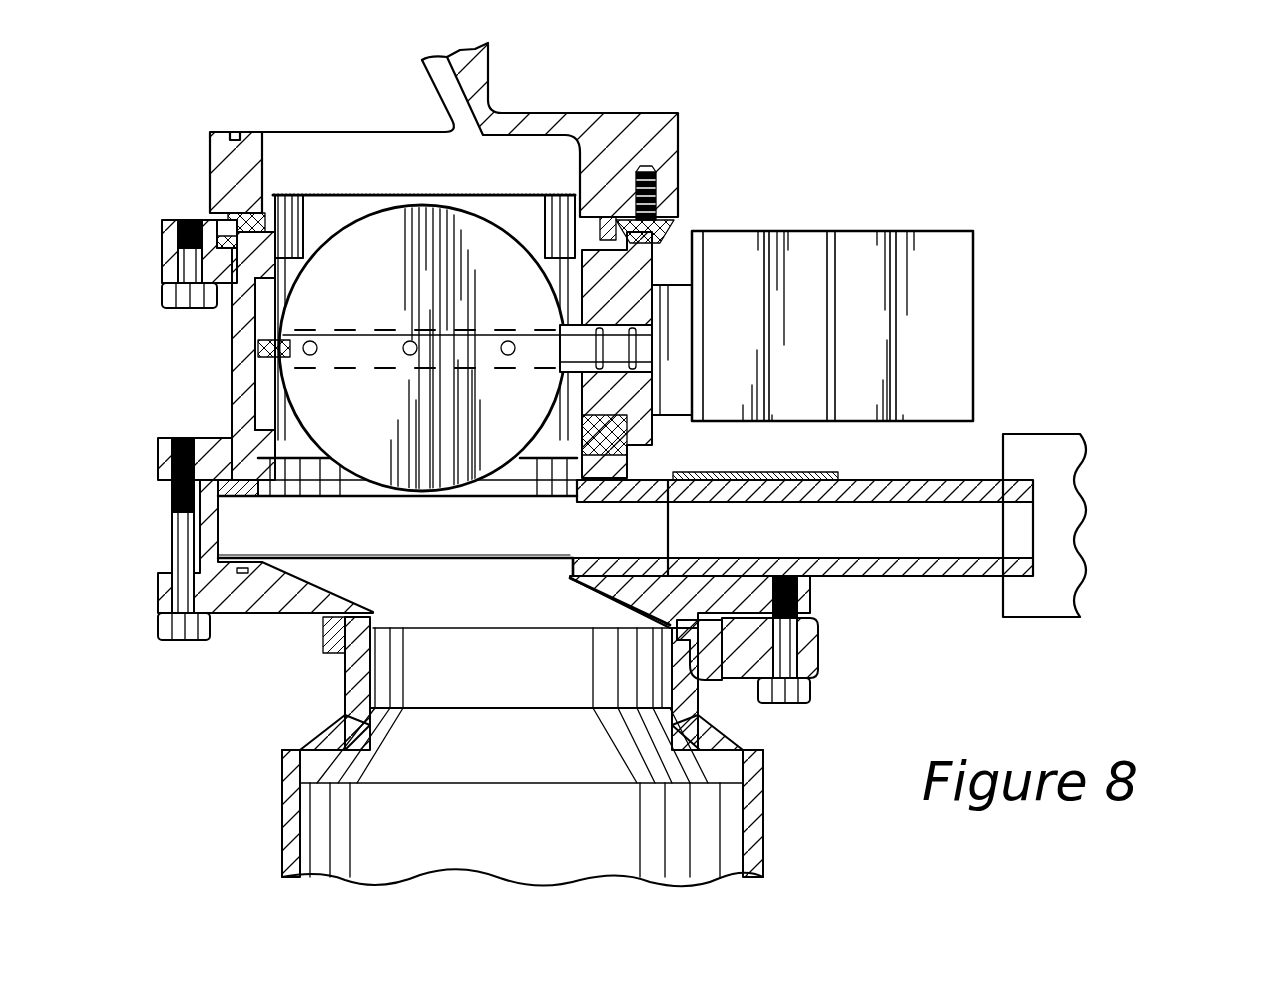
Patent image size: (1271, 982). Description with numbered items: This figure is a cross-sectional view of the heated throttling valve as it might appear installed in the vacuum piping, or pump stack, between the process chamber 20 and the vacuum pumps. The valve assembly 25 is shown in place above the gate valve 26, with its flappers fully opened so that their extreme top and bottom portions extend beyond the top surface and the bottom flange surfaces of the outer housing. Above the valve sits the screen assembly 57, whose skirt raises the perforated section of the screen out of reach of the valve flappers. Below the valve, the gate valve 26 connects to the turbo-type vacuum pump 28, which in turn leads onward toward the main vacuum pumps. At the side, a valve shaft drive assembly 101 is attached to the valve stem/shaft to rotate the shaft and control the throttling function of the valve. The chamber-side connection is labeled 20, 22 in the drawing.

The process chamber 20 is at (544, 143).
The valve body 22 is at (700, 99).
The valve assembly 25 is at (666, 266).
The gate valve 26 is at (1120, 487).
The turbo-type vacuum pump 28 is at (290, 786).
The screen assembly 57 is at (452, 184).
The valve shaft drive assembly 101 is at (942, 229).